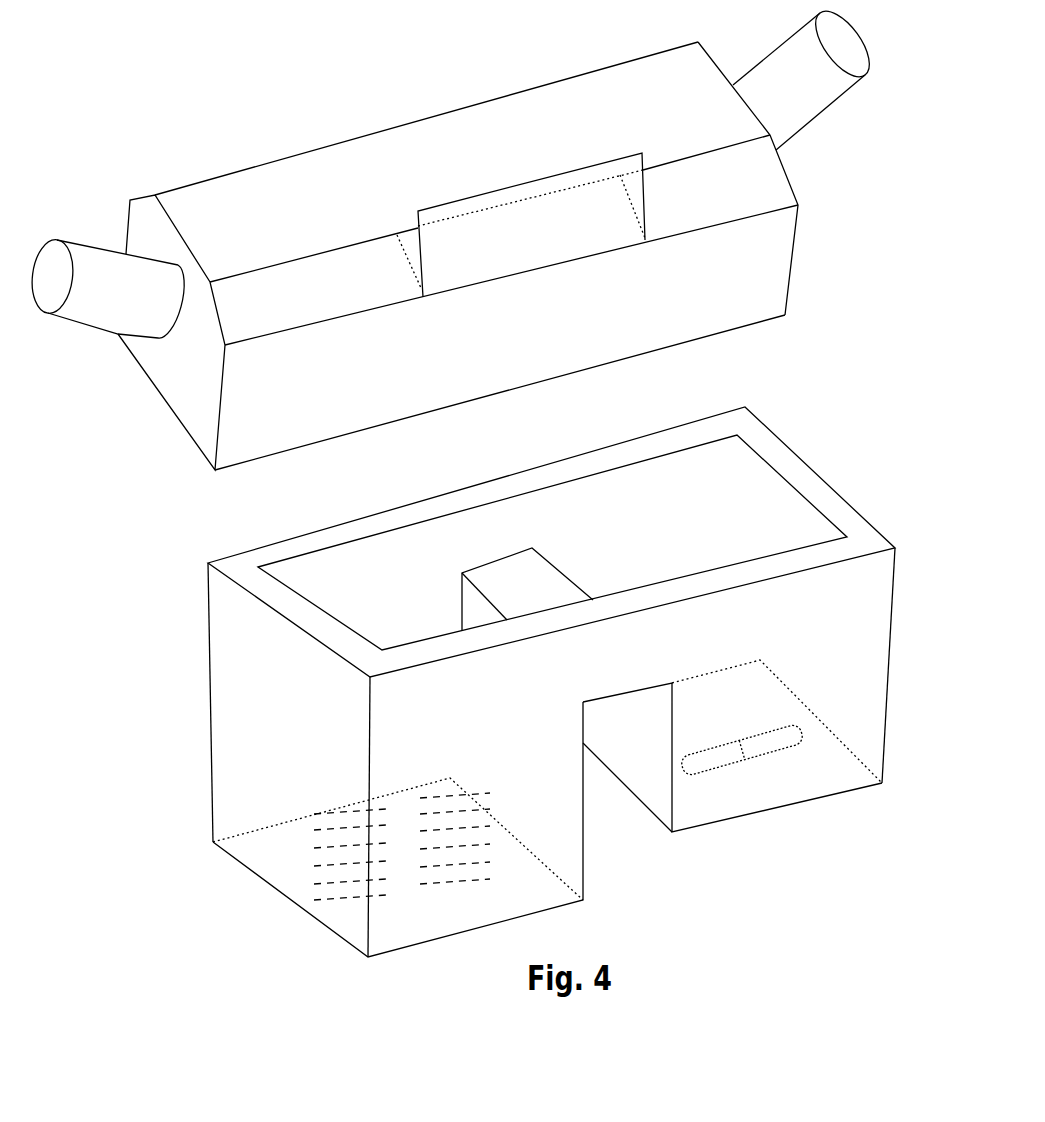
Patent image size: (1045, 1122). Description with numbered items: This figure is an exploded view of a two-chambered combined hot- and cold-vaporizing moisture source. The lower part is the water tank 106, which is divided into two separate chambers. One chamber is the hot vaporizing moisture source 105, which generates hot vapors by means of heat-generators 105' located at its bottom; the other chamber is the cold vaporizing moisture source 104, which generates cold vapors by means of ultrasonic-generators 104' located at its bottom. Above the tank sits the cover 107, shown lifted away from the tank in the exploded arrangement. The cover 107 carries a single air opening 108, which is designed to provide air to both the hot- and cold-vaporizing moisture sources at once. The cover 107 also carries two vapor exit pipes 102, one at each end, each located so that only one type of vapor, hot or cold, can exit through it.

The vapor exit pipe 102 is at (822, 107).
The cold vaporizing moisture source 104 is at (758, 782).
The ultrasonic-generators 104' is at (742, 720).
The hot vaporizing moisture source 105 is at (398, 876).
The heat-generators 105' is at (371, 812).
The water tank 106 is at (827, 462).
The cover 107 is at (420, 103).
The air opening 108 is at (547, 238).